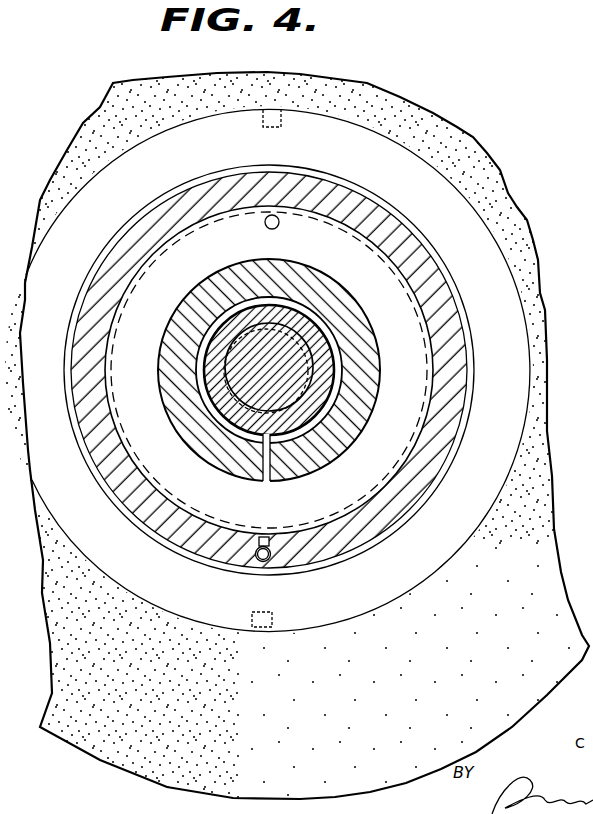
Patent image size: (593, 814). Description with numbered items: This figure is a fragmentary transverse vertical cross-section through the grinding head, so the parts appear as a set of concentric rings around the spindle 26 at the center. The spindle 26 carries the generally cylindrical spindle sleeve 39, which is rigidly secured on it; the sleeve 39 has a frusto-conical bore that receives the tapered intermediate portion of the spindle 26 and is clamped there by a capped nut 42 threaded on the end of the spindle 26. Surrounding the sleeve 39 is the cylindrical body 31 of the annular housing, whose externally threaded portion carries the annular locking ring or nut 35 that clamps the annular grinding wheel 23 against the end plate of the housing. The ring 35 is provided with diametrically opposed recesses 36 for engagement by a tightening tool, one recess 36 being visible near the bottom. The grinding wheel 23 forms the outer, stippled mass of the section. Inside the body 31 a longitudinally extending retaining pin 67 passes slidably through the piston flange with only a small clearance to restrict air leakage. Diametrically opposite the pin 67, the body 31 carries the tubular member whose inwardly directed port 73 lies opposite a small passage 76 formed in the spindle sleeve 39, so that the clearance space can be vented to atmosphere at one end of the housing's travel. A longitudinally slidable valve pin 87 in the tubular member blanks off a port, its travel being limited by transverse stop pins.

The grinding wheel 23 is at (98, 733).
The locking ring or nut 35 is at (410, 180).
The cylindrical body 31 is at (313, 172).
The retaining pin 67 is at (278, 226).
The spindle sleeve 39 is at (323, 283).
The capped nut 42 is at (320, 343).
The spindle 26 is at (292, 384).
The passage 76 is at (262, 474).
The aperture or port 73 is at (265, 542).
The valve pin 87 is at (260, 558).
The recess 36 is at (272, 623).